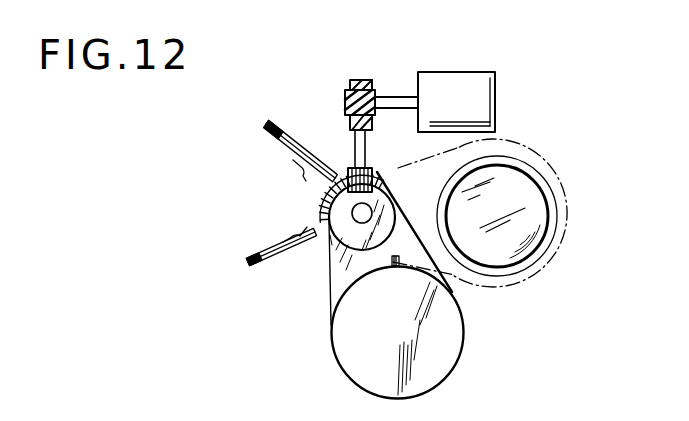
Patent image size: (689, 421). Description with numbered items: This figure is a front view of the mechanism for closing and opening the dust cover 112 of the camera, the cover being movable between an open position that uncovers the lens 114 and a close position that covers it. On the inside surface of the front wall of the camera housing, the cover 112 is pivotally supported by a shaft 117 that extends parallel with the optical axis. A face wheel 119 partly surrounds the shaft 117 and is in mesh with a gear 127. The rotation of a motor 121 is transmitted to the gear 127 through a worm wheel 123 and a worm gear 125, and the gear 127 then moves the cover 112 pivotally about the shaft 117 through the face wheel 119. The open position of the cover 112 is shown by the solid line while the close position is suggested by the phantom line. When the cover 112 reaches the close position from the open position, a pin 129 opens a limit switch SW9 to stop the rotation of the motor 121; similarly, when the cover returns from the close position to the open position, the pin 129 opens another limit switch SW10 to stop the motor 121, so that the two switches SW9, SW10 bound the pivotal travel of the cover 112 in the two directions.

The dust cover 112 is at (347, 365).
The lens 114 is at (537, 183).
The shaft 117 is at (358, 214).
The face wheel 119 is at (326, 205).
The motor 121 is at (467, 72).
The worm wheel 123 is at (345, 100).
The worm gear 125 is at (362, 80).
The gear 127 is at (355, 168).
The pin 129 is at (326, 187).
The limit switch SW10 is at (268, 126).
The limit switch SW9 is at (243, 262).